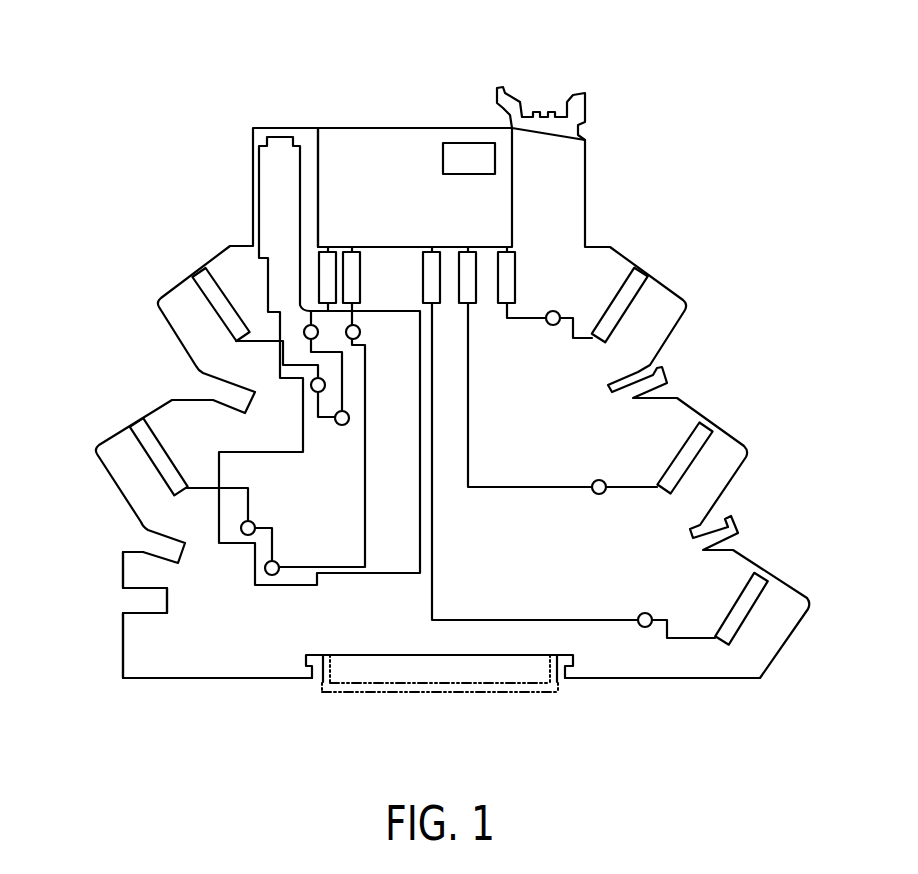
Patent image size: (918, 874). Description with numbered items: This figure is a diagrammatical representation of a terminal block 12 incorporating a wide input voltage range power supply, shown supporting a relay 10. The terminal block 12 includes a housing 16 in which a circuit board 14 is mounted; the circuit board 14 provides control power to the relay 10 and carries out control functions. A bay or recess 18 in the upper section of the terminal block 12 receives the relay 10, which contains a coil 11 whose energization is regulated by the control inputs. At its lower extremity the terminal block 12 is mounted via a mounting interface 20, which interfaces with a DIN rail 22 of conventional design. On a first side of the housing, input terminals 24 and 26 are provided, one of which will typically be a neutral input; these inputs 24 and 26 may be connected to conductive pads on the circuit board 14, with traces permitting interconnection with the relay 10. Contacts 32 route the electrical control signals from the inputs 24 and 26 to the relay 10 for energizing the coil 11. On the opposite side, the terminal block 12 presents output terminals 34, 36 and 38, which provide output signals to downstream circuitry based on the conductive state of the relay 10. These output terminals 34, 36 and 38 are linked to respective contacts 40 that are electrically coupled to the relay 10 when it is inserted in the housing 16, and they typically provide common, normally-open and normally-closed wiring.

The relay 10 is at (422, 191).
The coil 11 is at (466, 143).
The terminal block 12 is at (76, 231).
The circuit board 14 is at (326, 519).
The housing 16 is at (123, 657).
The bay or recess 18 is at (318, 150).
The mounting interface 20 is at (314, 684).
The DIN rail 22 is at (443, 696).
The input terminal 24 is at (203, 275).
The input terminal 26 is at (137, 430).
The contacts 32 is at (349, 254).
The output terminal 34 is at (638, 279).
The output terminal 36 is at (702, 428).
The output terminal 38 is at (761, 577).
The contacts 40 is at (501, 256).